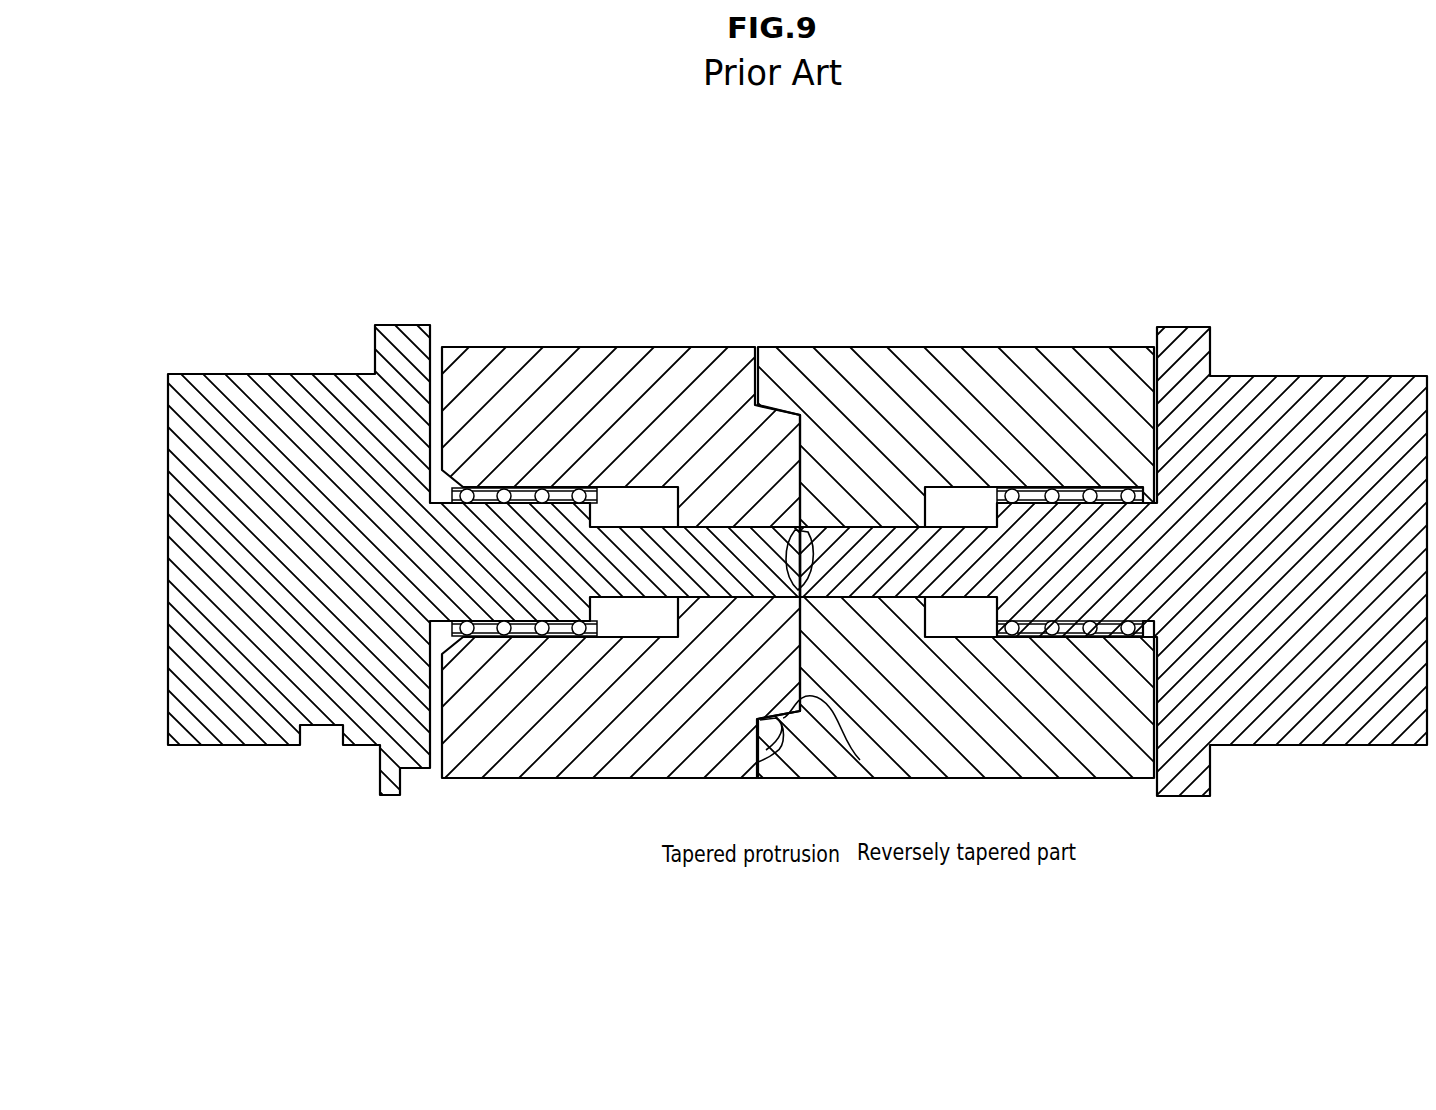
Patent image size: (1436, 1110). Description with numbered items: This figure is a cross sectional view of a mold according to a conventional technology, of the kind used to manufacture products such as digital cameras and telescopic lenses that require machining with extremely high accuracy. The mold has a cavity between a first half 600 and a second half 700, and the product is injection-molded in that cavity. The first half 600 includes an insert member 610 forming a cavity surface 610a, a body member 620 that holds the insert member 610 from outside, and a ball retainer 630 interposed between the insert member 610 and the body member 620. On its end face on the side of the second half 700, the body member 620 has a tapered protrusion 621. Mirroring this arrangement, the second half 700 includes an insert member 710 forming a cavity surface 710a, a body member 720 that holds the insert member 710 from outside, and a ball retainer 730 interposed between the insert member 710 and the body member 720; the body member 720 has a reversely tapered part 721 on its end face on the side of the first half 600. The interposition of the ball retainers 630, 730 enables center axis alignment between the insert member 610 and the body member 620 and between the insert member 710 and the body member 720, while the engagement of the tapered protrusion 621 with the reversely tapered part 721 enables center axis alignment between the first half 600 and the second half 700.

The first half 600 is at (730, 205).
The insert member 610 is at (274, 370).
The cavity surface 610a is at (790, 588).
The body member 620 is at (622, 345).
The tapered protrusion 621 is at (766, 750).
The ball retainer 630 is at (541, 485).
The second half 700 is at (1330, 205).
The insert member 710 is at (1267, 370).
The cavity surface 710a is at (808, 528).
The body member 720 is at (865, 345).
The reversely tapered part 721 is at (860, 760).
The ball retainer 730 is at (1090, 485).